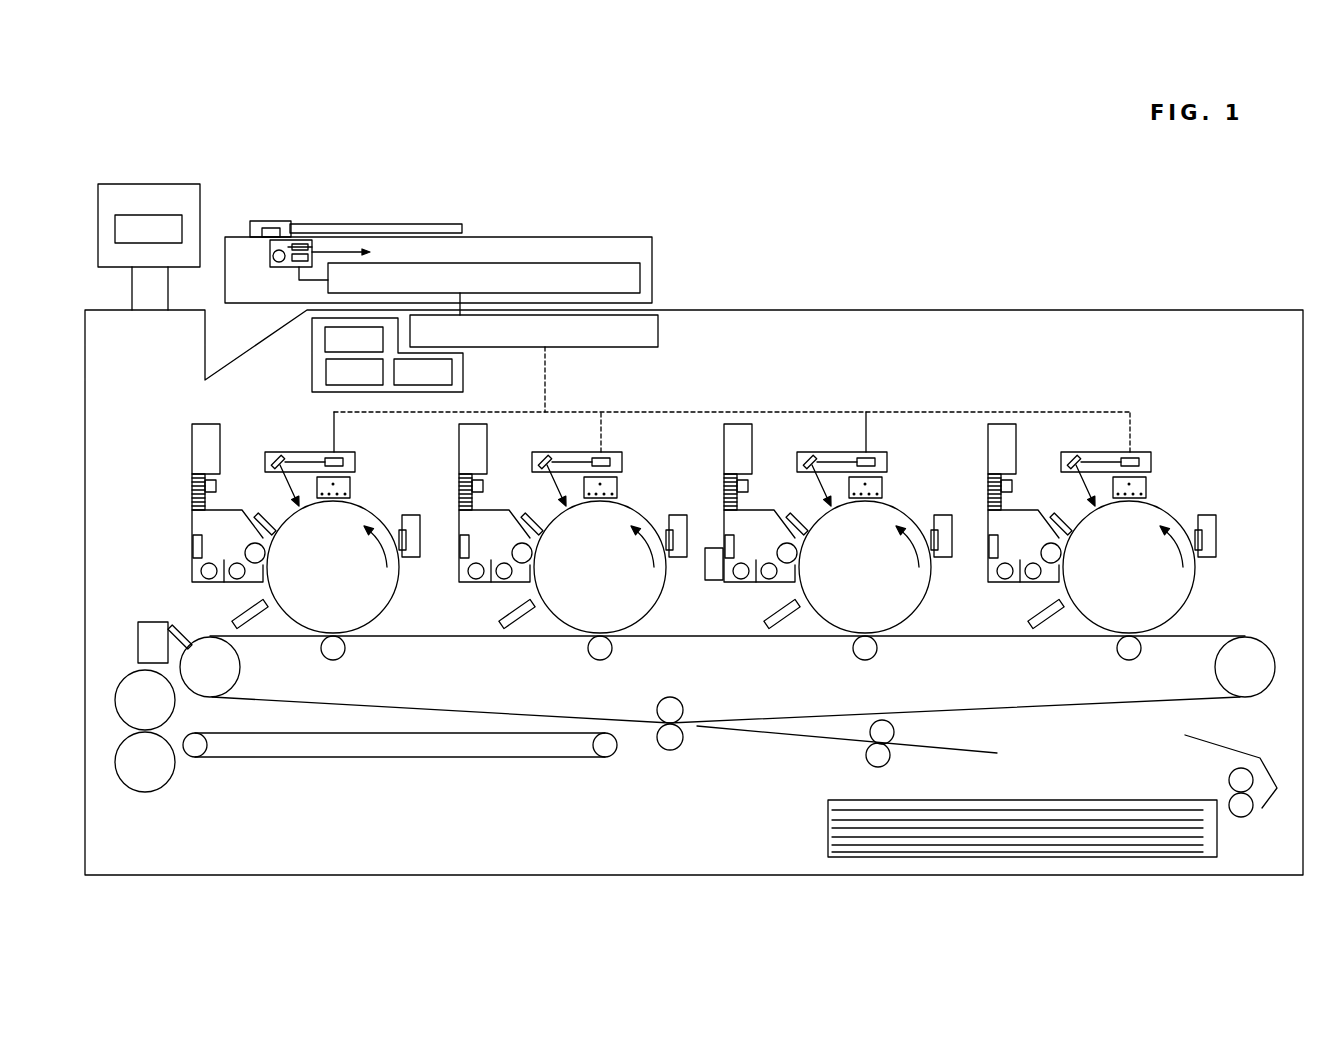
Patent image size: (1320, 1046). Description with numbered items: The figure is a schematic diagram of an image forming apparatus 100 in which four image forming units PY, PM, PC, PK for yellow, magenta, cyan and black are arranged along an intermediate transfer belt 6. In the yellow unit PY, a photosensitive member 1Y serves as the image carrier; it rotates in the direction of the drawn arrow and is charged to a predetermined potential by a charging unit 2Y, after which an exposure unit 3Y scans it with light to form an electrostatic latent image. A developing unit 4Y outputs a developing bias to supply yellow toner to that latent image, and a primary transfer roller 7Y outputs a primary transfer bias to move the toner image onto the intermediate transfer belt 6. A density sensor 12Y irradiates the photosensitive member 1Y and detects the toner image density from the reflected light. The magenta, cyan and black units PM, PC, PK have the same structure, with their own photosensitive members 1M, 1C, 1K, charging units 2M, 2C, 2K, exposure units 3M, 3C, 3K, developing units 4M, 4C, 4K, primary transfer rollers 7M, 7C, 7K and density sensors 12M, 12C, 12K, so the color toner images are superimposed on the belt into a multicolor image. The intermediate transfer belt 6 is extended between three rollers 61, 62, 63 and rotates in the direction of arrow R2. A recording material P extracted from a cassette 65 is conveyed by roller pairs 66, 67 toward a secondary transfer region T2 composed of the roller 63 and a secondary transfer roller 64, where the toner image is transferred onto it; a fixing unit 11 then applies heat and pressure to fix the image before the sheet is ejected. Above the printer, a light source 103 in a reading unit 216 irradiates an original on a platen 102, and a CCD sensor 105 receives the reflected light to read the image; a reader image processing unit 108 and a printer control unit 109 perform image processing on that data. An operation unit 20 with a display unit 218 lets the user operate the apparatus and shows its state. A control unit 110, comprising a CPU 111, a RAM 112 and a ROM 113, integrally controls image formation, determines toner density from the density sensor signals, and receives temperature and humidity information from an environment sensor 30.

The image forming apparatus 100 is at (756, 165).
The operation unit 20 is at (187, 184).
The display unit 218 is at (140, 215).
The reading unit 216 is at (565, 236).
The platen 102 is at (455, 224).
The light source 103 is at (270, 246).
The CCD sensor 105 is at (293, 268).
The reader image processing unit 108 is at (513, 262).
The control unit 110 is at (312, 326).
The ROM 113 is at (325, 340).
The CPU 111 is at (326, 372).
The RAM 112 is at (452, 370).
The printer control unit 109 is at (658, 328).
The image forming unit PY is at (388, 472).
The image forming unit PM is at (564, 545).
The image forming unit PC is at (826, 545).
The image forming unit PK is at (1091, 545).
The photosensitive member 1Y is at (392, 604).
The photosensitive member 1M is at (623, 567).
The photosensitive member 1C is at (885, 567).
The photosensitive member 1K is at (1150, 567).
The charging unit 2Y is at (352, 488).
The charging unit 2M is at (632, 494).
The charging unit 2C is at (894, 494).
The charging unit 2K is at (1159, 494).
The exposure unit 3Y is at (297, 450).
The exposure unit 3M is at (572, 457).
The exposure unit 3C is at (837, 457).
The exposure unit 3K is at (1101, 457).
The developing unit 4Y is at (192, 526).
The developing unit 4M is at (479, 503).
The developing unit 4C is at (744, 503).
The developing unit 4K is at (1008, 503).
The primary transfer roller 7Y is at (345, 652).
The primary transfer roller 7M is at (628, 658).
The primary transfer roller 7C is at (890, 658).
The primary transfer roller 7K is at (1155, 658).
The density sensor 12Y is at (236, 612).
The density sensor 12M is at (487, 609).
The density sensor 12C is at (752, 609).
The density sensor 12K is at (1016, 609).
The environment sensor 30 is at (705, 576).
The intermediate transfer belt 6 is at (1133, 704).
The arrow R2 is at (1065, 685).
The roller 61 is at (241, 668).
The roller 62 is at (1253, 640).
The roller 63 is at (678, 698).
The secondary transfer roller 64 is at (681, 746).
The secondary transfer region T2 is at (629, 755).
The fixing unit 11 is at (147, 793).
The roller pair 67 is at (896, 728).
The recording material P is at (851, 803).
The cassette 65 is at (828, 832).
The roller pair 66 is at (1242, 818).